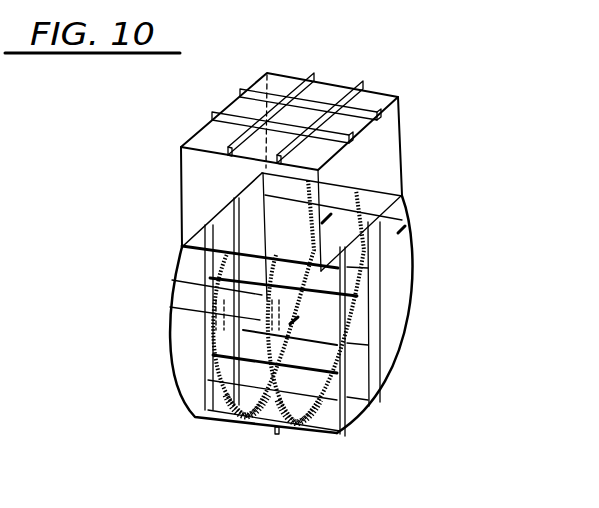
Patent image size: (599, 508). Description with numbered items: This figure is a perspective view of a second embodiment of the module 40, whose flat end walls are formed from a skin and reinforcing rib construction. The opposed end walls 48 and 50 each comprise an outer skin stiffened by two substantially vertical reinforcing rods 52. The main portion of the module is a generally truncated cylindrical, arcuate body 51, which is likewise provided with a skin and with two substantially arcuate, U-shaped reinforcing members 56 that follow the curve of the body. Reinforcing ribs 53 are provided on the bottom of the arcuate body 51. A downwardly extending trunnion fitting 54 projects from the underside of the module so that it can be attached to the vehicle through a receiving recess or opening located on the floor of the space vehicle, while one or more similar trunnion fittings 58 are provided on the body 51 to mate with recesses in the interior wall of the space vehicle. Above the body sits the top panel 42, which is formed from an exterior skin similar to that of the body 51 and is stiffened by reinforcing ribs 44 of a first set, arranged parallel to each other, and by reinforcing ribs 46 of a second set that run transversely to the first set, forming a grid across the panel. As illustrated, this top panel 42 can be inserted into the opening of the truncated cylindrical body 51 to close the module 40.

The module 40 is at (413, 201).
The top panel 42 is at (283, 78).
The reinforcing ribs 44 is at (315, 90).
The reinforcing ribs 46 is at (238, 100).
The end wall 48 is at (183, 340).
The end wall 50 is at (398, 311).
The body 51 is at (416, 258).
The reinforcing rods 52 is at (203, 386).
The reinforcing ribs 53 is at (323, 436).
The trunnion fitting 54 is at (276, 436).
The U-shaped reinforcing members 56 is at (267, 419).
The trunnion fittings 58 is at (413, 221).